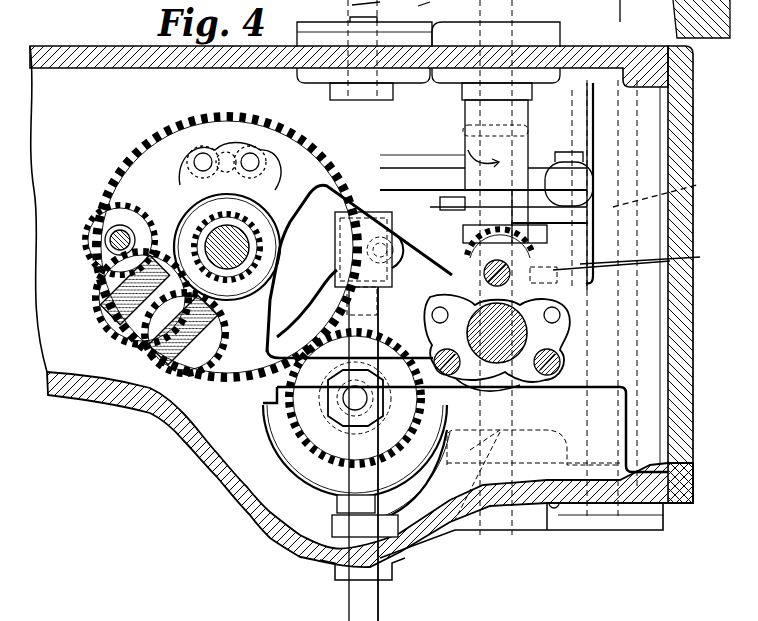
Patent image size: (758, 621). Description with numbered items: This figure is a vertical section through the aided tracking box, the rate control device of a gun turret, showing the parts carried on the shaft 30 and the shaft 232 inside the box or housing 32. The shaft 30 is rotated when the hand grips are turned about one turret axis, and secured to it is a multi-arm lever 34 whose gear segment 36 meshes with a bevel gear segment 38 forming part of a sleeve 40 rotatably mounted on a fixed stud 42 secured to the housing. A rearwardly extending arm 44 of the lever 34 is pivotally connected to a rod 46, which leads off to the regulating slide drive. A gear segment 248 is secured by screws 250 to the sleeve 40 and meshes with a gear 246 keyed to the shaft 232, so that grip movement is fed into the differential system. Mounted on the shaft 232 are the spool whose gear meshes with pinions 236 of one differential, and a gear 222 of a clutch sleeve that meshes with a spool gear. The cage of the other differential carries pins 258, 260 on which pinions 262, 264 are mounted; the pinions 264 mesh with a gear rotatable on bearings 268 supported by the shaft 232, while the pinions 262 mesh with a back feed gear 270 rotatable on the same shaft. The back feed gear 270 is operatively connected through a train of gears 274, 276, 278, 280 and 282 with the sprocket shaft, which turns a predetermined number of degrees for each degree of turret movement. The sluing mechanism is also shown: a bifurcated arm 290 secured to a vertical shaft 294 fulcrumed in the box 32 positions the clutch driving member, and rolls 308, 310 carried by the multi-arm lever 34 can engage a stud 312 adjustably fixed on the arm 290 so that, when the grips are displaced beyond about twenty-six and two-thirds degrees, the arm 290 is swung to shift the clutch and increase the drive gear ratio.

The shaft 30 is at (530, 115).
The box or housing 32 is at (693, 235).
The multi-arm lever 34 is at (533, 213).
The gear segment 36 is at (485, 250).
The bevel gear segment 38 is at (590, 262).
The sleeve 40 is at (548, 330).
The fixed stud 42 is at (493, 345).
The rearwardly extending arm 44 is at (573, 215).
The rod 46 is at (430, 173).
The gear 222 is at (308, 450).
The shaft 232 is at (210, 270).
The pinions 236 is at (346, 8).
The gear 246 is at (246, 214).
The gear segment 248 is at (372, 152).
The screws 250 is at (500, 395).
The pin 258 is at (194, 162).
The pin 260 is at (252, 160).
The pinions 262 is at (248, 133).
The pinions 264 is at (195, 137).
The bearings 268 is at (406, 8).
The back feed gear 270 is at (180, 190).
The gear 274 is at (87, 222).
The gear 276 is at (105, 238).
The gear 278 is at (100, 302).
The gear 280 is at (110, 317).
The gear 282 is at (143, 352).
The bifurcated arm 290 is at (420, 480).
The vertical shaft 294 is at (668, 192).
The roll 308 is at (653, 259).
The roll 310 is at (420, 283).
The stud 312 is at (533, 382).